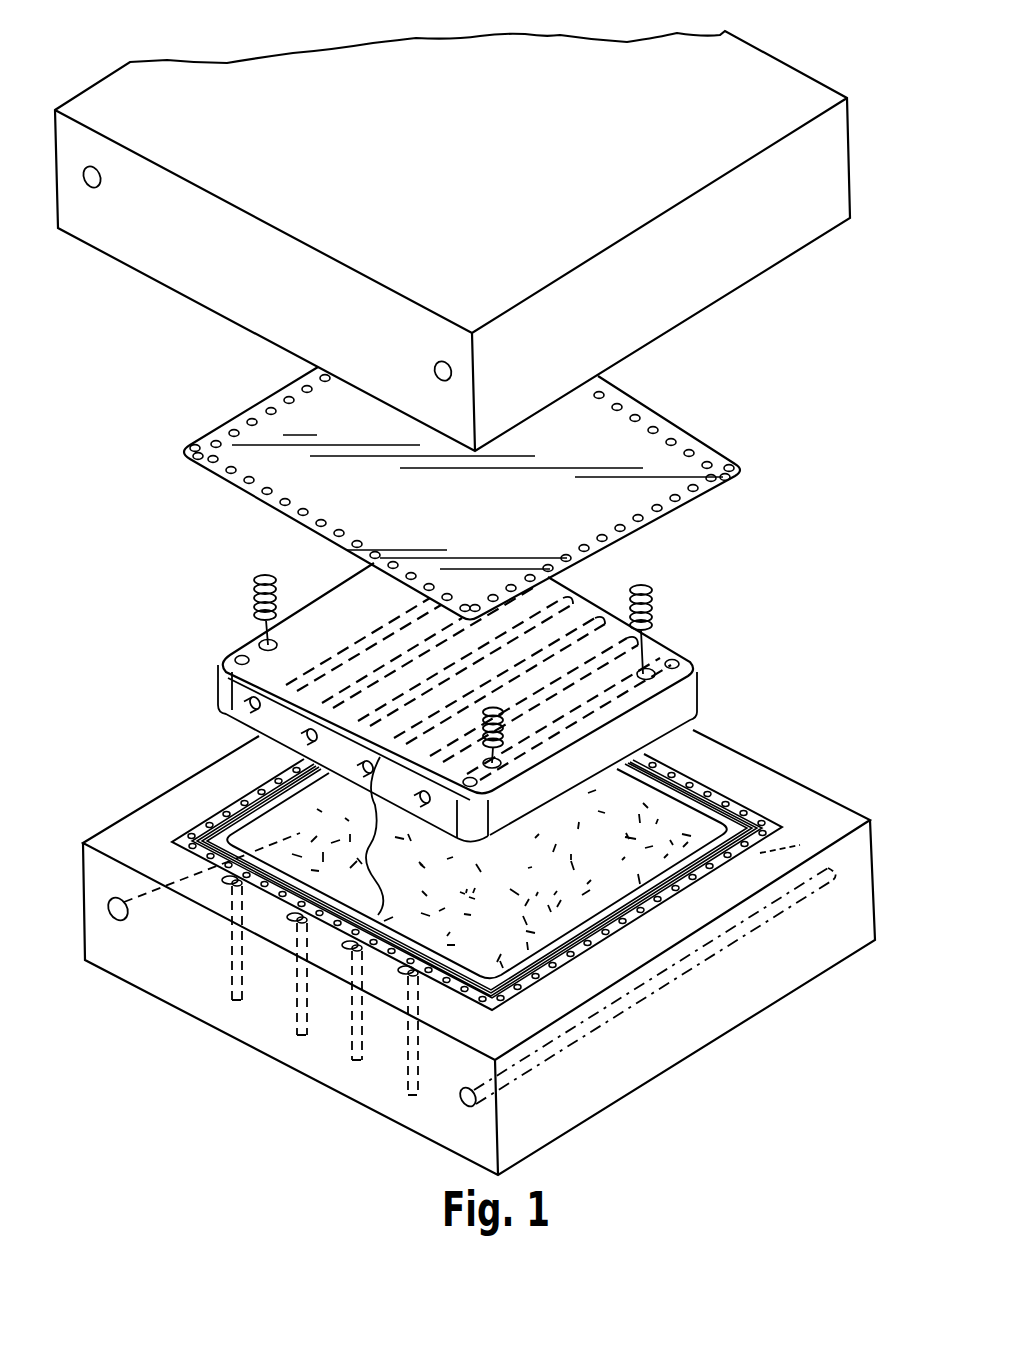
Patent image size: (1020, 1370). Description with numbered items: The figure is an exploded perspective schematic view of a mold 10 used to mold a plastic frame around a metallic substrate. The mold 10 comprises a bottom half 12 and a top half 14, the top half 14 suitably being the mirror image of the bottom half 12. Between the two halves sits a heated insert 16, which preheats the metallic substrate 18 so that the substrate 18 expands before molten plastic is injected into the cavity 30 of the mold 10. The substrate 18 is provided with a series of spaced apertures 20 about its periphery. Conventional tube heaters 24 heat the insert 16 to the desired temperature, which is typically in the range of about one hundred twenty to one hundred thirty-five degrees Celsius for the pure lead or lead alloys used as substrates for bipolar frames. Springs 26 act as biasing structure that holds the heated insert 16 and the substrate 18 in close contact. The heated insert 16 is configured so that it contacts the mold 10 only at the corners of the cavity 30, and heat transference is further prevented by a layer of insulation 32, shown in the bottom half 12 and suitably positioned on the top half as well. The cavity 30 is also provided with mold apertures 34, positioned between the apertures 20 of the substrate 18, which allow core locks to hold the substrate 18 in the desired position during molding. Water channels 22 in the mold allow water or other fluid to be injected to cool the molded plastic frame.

The mold 10 is at (814, 497).
The bottom half 12 is at (827, 813).
The top half 14 is at (188, 280).
The heated insert 16 is at (243, 641).
The metallic substrate 18 is at (202, 423).
The spaced apertures 20 is at (273, 406).
The water channels 22 is at (608, 1095).
The tube heaters 24 is at (248, 712).
The springs 26 is at (257, 580).
The cavity 30 is at (285, 828).
The layer of insulation 32 is at (647, 843).
The mold apertures 34 is at (220, 812).